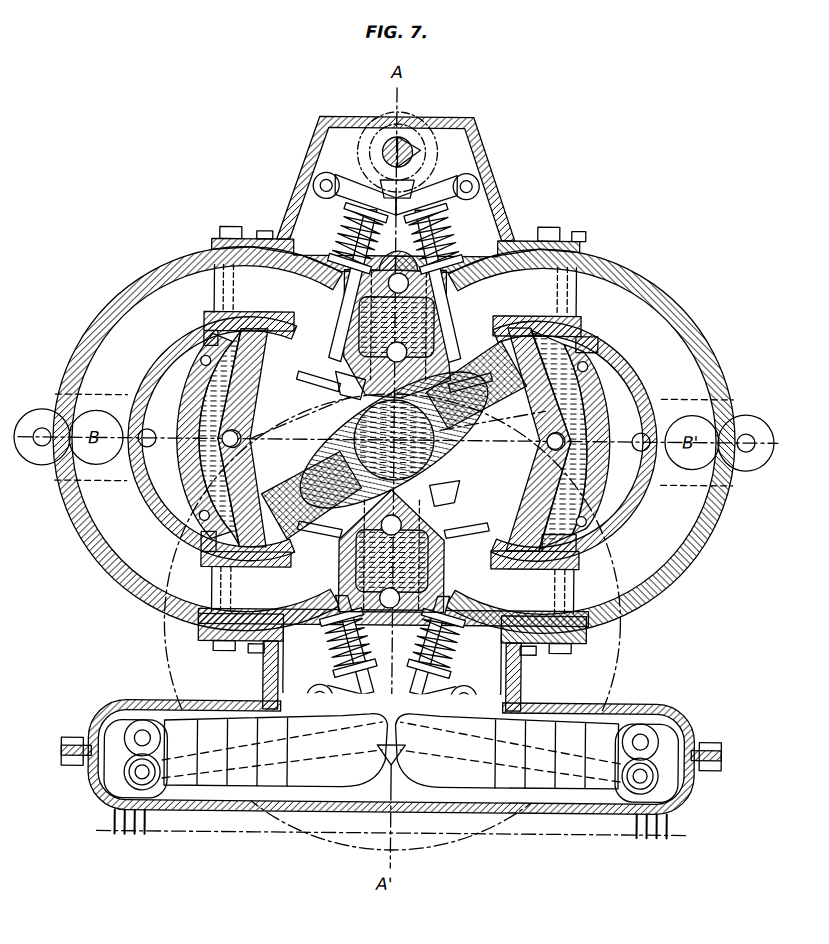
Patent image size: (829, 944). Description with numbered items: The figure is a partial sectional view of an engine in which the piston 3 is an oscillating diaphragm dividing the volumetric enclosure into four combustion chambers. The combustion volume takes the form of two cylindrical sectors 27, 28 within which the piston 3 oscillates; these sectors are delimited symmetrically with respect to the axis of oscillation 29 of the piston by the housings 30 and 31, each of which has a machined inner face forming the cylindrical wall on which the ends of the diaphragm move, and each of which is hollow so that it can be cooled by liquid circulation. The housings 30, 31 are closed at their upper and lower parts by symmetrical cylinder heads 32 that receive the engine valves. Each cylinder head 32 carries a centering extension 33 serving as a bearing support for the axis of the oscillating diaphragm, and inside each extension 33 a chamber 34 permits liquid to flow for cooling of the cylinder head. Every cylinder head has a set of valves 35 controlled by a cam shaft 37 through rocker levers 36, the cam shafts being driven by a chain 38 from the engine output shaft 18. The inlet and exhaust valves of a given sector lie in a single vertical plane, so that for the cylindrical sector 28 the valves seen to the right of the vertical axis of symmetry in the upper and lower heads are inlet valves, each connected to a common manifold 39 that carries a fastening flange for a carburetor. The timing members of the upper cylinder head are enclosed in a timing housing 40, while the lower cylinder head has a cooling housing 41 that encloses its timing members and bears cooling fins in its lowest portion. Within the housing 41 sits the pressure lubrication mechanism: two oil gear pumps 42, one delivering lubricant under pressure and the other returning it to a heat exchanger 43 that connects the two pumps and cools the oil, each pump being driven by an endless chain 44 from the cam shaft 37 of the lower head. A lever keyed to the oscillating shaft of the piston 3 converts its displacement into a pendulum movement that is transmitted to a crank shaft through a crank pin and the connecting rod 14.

The piston 3 is at (356, 426).
The connecting rod 14 is at (100, 775).
The engine output shaft 18 is at (399, 563).
The cylindrical sector 27 is at (291, 403).
The cylindrical sector 28 is at (532, 417).
The axis of oscillation 29 is at (410, 444).
The housing 30 is at (280, 492).
The housing 31 is at (530, 500).
The cylinder head 32 is at (548, 226).
The centering extension 33 is at (338, 384).
The chamber 34 is at (404, 330).
The valves 35 is at (345, 298).
The rocker levers 36 is at (425, 180).
The cam shaft 37 is at (381, 155).
The chain 38 is at (432, 481).
The common manifold 39 is at (212, 262).
The timing housing 40 is at (486, 160).
The cooling housing 41 is at (674, 812).
The oil gear pumps 42 is at (137, 725).
The heat exchanger 43 is at (312, 782).
The endless chain 44 is at (398, 770).